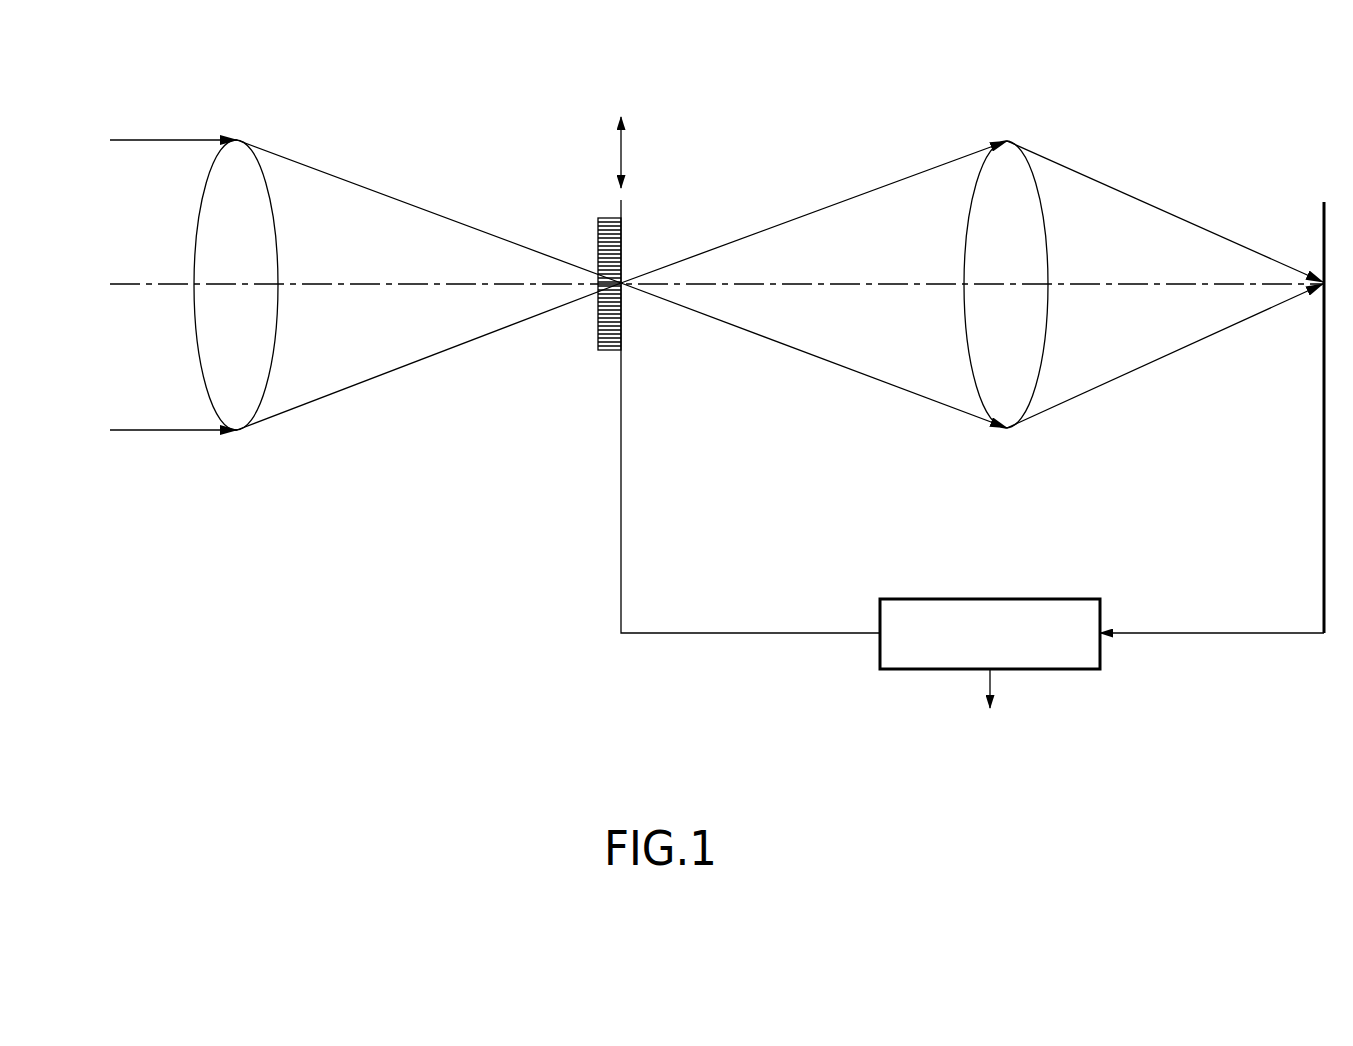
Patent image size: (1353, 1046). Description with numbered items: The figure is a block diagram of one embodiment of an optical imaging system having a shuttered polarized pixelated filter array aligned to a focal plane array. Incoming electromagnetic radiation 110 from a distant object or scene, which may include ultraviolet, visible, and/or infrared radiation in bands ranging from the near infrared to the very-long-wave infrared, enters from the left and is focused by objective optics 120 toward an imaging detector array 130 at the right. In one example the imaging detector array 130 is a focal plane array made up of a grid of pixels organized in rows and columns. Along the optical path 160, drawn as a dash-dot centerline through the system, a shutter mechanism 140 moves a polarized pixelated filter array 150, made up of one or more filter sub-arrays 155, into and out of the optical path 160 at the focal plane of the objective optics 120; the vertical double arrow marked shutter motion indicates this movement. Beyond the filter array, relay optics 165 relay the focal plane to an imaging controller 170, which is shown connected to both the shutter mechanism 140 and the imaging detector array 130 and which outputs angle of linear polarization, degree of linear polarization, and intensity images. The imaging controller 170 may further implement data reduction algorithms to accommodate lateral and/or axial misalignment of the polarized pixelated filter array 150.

The incoming electromagnetic radiation 110 is at (164, 140).
The objective optics 120 is at (240, 442).
The imaging detector array 130 is at (1320, 335).
The shutter mechanism 140 is at (626, 357).
The polarized pixelated filter array 150 is at (676, 241).
The filter sub-array 155 is at (598, 328).
The optical path 160 is at (482, 283).
The relay optics 165 is at (1010, 432).
The imaging controller 170 is at (1062, 599).